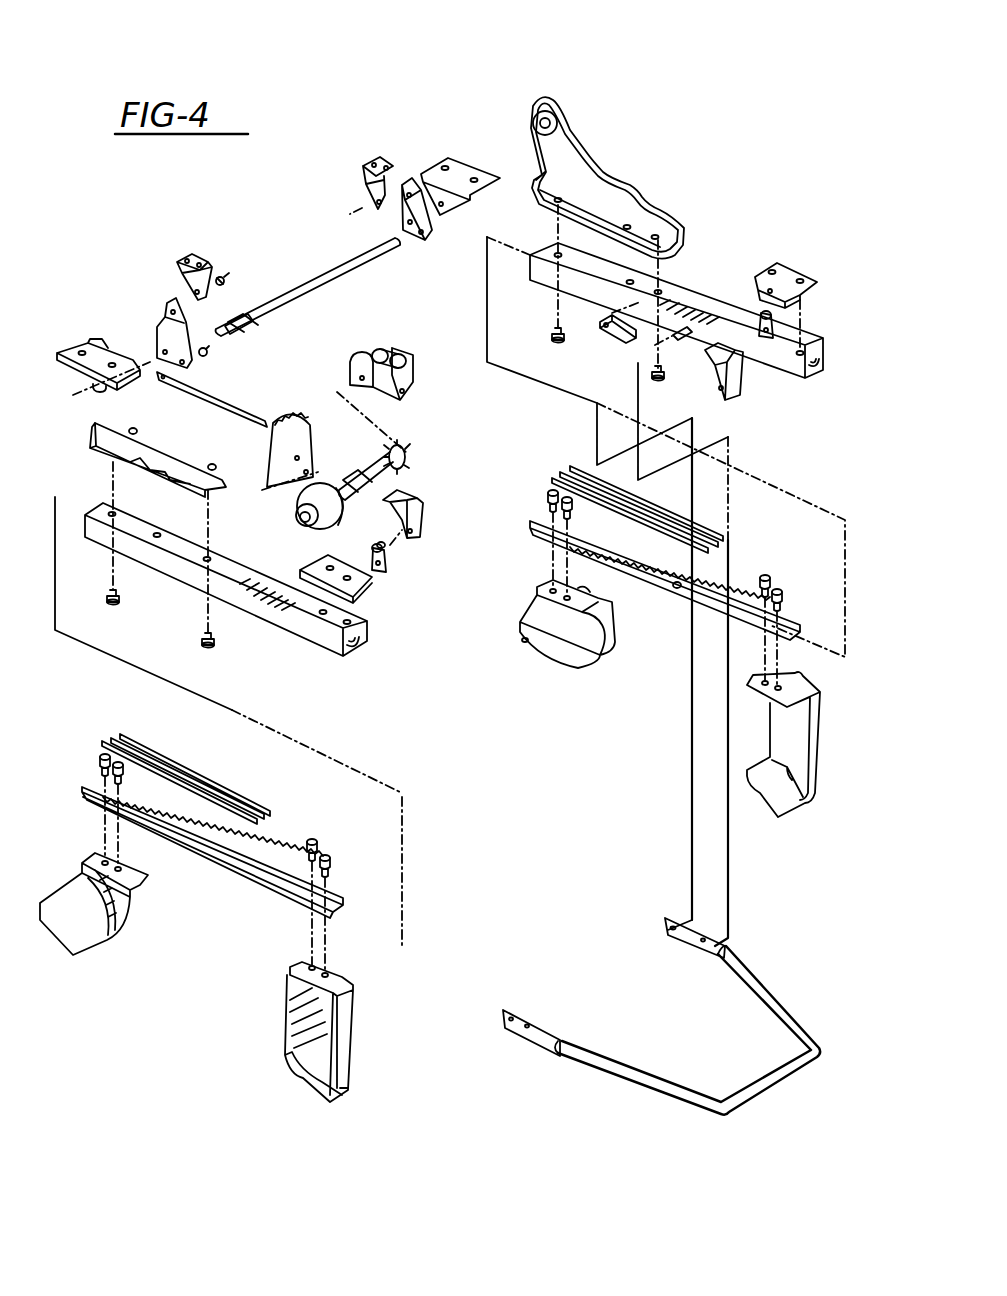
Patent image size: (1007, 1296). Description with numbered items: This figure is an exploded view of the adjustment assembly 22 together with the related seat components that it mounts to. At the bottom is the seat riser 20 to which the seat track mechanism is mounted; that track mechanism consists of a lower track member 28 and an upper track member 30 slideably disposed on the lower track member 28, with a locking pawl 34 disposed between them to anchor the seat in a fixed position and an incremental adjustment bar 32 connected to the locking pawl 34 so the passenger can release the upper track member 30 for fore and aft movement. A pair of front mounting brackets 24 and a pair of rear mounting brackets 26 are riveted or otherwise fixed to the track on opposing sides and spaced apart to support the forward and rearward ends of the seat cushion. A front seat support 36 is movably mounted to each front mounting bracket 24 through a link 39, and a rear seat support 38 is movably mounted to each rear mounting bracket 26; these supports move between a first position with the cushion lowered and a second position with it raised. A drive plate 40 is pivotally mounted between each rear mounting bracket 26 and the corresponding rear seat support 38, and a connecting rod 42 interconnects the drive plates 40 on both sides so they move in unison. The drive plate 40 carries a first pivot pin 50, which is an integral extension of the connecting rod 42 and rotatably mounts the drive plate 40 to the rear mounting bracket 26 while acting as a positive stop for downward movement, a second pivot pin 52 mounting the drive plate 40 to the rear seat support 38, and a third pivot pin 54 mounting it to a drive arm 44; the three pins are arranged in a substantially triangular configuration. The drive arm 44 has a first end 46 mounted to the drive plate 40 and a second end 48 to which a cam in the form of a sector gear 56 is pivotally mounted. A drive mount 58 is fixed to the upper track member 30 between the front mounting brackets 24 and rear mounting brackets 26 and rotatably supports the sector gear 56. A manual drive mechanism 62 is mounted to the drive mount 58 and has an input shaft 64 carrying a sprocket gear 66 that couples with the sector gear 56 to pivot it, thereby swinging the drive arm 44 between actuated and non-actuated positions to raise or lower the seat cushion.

The seat riser 20 is at (576, 662).
The adjustment assembly 22 is at (441, 116).
The front mounting bracket 24 is at (378, 590).
The rear mounting bracket 26 is at (68, 340).
The lower track member 28 is at (677, 590).
The upper track member 30 is at (302, 612).
The incremental adjustment bar 32 is at (612, 1050).
The locking pawl 34 is at (612, 340).
The front seat support 36 is at (422, 530).
The rear seat support 38 is at (188, 258).
The link 39 is at (390, 568).
The drive plate 40 is at (157, 325).
The connecting rod 42 is at (316, 268).
The drive arm 44 is at (206, 404).
The first end 46 is at (152, 377).
The second end 48 is at (271, 424).
The first pivot pin 50 is at (252, 331).
The second pivot pin 52 is at (234, 278).
The third pivot pin 54 is at (210, 351).
The sector gear 56 is at (330, 445).
The drive mount 58 is at (416, 356).
The drive mechanism 62 is at (297, 505).
The input shaft 64 is at (398, 467).
The sprocket gear 66 is at (413, 456).